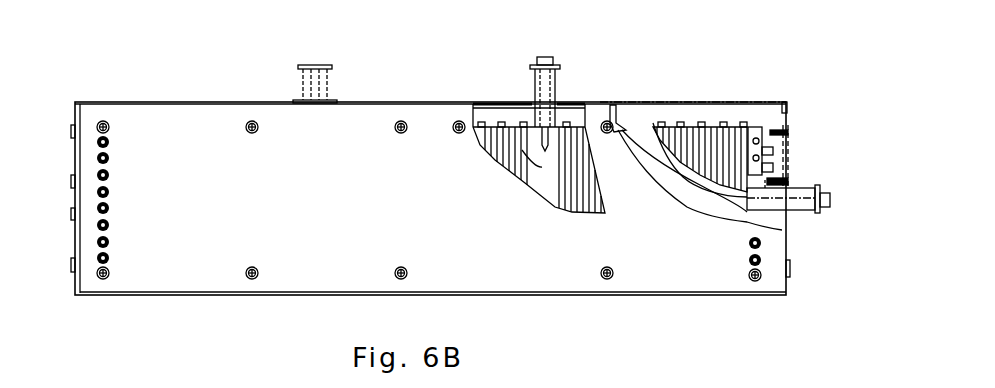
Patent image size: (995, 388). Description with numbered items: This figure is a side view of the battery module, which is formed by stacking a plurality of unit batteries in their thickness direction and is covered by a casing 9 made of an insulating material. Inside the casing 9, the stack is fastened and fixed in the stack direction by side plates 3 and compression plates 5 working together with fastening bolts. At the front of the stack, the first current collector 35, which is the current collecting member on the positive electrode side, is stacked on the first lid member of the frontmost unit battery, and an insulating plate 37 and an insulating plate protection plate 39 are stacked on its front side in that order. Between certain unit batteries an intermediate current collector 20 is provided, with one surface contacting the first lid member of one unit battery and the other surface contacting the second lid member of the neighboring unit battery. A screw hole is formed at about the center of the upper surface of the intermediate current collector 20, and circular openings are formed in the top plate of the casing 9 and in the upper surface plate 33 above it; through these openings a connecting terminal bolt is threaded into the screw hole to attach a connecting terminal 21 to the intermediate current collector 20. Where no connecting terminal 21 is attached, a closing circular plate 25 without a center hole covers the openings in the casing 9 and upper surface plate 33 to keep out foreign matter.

The side plate 3 is at (639, 123).
The compression plate 5 is at (757, 128).
The casing 9 is at (427, 112).
The intermediate current collector 20 is at (517, 125).
The connecting terminal 21 is at (532, 56).
The closing circular plate 25 is at (297, 101).
The upper surface plate 33 is at (582, 100).
The first current collector 35 is at (748, 127).
The insulating plate 37 is at (750, 127).
The insulating plate protection plate 39 is at (750, 127).